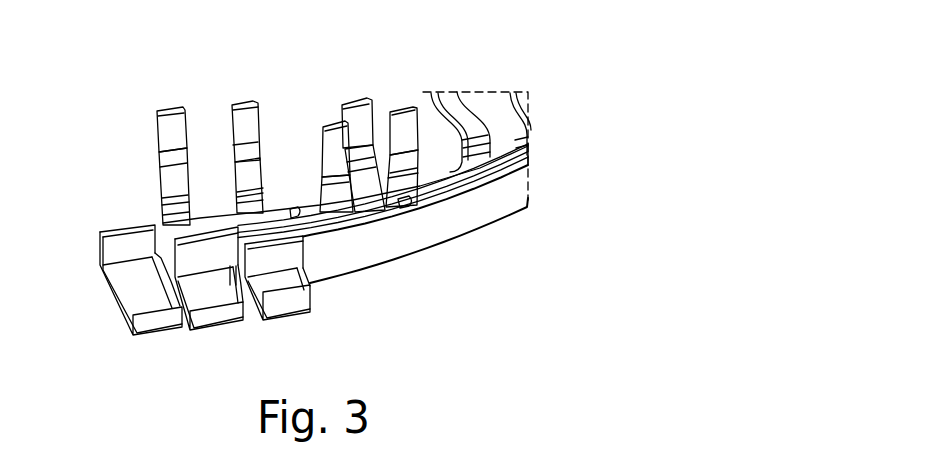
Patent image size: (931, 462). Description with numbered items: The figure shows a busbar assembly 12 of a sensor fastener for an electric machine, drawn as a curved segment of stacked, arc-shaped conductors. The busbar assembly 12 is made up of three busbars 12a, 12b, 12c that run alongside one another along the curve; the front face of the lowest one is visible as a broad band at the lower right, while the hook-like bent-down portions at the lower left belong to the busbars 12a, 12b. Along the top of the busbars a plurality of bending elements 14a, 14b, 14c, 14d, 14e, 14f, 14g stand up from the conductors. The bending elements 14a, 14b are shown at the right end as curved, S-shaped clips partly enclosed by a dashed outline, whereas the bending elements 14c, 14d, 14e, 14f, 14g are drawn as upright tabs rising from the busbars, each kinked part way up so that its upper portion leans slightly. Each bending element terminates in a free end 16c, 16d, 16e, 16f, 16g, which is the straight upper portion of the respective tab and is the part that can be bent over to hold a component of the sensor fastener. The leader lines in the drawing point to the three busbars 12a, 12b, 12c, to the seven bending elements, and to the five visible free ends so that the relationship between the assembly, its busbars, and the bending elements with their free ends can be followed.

The busbar assembly 12 is at (512, 227).
The busbar 12a is at (163, 233).
The busbar 12b is at (270, 212).
The busbar 12c is at (413, 238).
The bending element 14a is at (528, 122).
The bending element 14b is at (477, 123).
The bending element 14c is at (420, 175).
The bending element 14d is at (368, 183).
The bending element 14e is at (340, 203).
The bending element 14f is at (240, 178).
The bending element 14g is at (170, 190).
The free end 16c is at (402, 118).
The free end 16d is at (360, 110).
The free end 16e is at (335, 128).
The free end 16f is at (243, 127).
The free end 16g is at (168, 130).